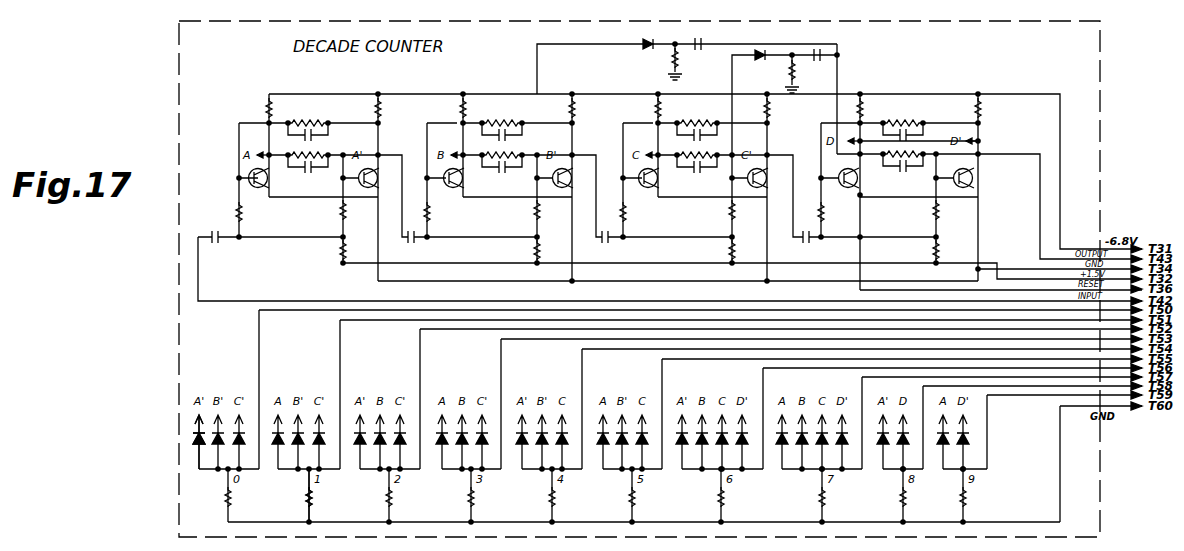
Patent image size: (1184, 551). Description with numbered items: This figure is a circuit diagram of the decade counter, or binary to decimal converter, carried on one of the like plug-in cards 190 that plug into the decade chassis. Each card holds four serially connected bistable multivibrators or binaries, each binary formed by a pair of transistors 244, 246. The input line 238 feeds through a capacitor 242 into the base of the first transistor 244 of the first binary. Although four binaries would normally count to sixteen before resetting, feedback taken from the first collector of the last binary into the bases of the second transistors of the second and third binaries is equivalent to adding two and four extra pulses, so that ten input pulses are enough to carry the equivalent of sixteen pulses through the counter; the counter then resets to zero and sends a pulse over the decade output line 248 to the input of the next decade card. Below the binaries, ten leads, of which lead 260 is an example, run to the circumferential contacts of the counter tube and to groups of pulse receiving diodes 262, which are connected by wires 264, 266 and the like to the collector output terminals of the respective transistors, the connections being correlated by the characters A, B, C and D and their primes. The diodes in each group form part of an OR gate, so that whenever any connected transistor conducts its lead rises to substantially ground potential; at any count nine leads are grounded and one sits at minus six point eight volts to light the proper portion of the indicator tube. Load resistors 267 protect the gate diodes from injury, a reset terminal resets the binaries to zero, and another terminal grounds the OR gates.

The plug-in card 190 is at (192, 91).
The input lead 238 is at (820, 298).
The capacitor 242 is at (224, 242).
The transistor 244 is at (256, 188).
The transistor 246 is at (360, 182).
The decade output line 248 is at (1028, 234).
The lead 260 is at (259, 347).
The pulse receiving diode 262 is at (199, 442).
The wire 264 is at (199, 432).
The wire 266 is at (218, 430).
The load resistor 267 is at (309, 500).